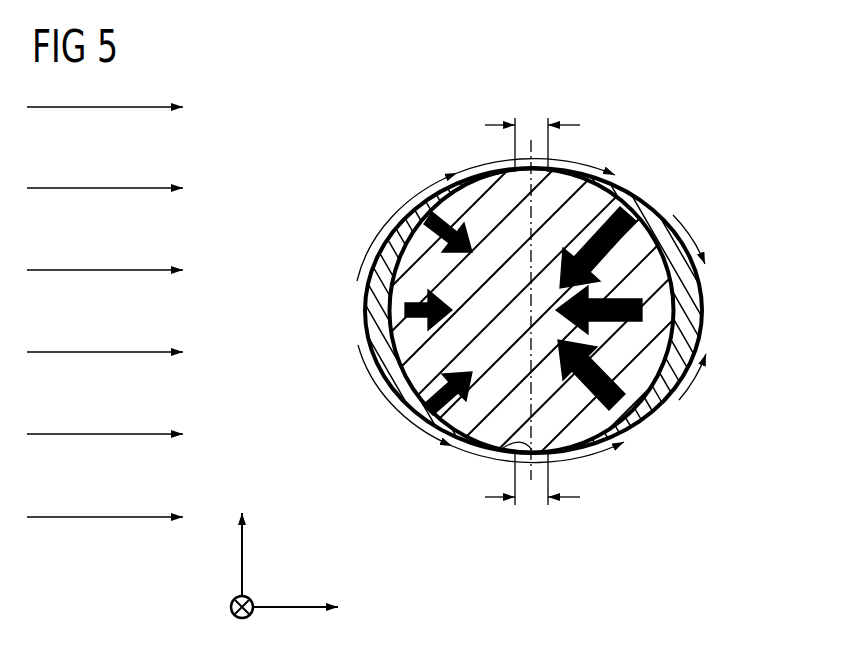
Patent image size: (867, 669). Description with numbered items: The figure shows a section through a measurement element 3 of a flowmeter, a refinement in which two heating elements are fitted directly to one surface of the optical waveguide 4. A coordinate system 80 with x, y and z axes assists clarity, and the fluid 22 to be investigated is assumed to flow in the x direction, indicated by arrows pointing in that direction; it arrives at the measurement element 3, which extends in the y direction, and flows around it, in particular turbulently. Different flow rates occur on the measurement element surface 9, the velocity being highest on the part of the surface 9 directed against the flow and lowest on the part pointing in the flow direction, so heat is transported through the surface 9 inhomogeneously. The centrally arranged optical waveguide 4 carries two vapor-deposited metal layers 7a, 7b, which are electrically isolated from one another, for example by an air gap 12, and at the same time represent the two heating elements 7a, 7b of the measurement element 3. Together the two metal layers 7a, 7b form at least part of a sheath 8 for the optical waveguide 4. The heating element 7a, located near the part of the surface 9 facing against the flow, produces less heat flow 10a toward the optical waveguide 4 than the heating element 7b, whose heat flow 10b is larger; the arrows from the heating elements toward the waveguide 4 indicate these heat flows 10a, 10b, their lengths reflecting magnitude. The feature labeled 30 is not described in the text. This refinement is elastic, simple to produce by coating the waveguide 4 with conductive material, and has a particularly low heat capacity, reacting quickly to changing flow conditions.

The measurement element 3 is at (466, 349).
The optical waveguide 4 is at (633, 254).
The heating element 7a is at (400, 240).
The heating element 7b is at (690, 355).
The sheath 8 is at (466, 349).
The measurement element surface 9 is at (665, 192).
The heat flow 10a is at (435, 388).
The heat flow 10b is at (614, 224).
The air gap 12 is at (532, 308).
The fluid 22 is at (91, 550).
The gap / seam 30 is at (503, 448).
The coordinate system 80 is at (282, 572).